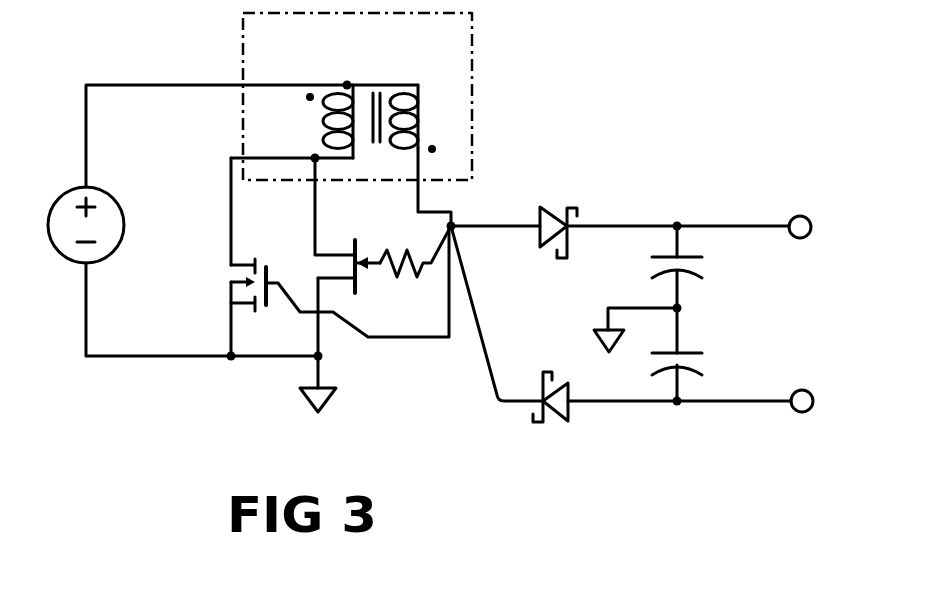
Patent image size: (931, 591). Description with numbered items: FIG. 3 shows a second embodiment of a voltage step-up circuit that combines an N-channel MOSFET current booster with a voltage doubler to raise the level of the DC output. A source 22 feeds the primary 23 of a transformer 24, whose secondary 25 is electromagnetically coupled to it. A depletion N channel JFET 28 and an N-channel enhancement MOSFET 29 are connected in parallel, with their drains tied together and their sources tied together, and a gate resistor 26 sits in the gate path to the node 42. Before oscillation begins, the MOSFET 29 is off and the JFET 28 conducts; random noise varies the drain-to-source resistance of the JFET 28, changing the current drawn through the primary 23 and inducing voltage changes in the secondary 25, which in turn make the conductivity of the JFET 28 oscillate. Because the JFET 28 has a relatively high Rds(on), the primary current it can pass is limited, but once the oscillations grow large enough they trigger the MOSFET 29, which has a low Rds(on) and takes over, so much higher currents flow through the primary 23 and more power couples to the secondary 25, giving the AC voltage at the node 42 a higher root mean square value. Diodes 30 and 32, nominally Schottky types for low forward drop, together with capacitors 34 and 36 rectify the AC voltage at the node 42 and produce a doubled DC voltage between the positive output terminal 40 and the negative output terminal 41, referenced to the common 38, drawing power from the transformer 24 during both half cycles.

The source 22 is at (53, 255).
The primary side of transformer 23 is at (317, 125).
The transformer 24 is at (475, 142).
The secondary side of transformer 25 is at (428, 113).
The gate resistor 26 is at (402, 245).
The depletion N channel JFET 28 is at (360, 287).
The N-channel enhancement MOSFET 29 is at (270, 272).
The diode 30 is at (552, 202).
The diode 32 is at (565, 427).
The capacitor 34 is at (700, 272).
The capacitor 36 is at (700, 364).
The common 38 is at (303, 405).
The positive output terminal from voltage step up circuit 40 is at (810, 245).
The negative output terminal from voltage step up circuit 41 is at (823, 415).
The node 42 is at (457, 213).